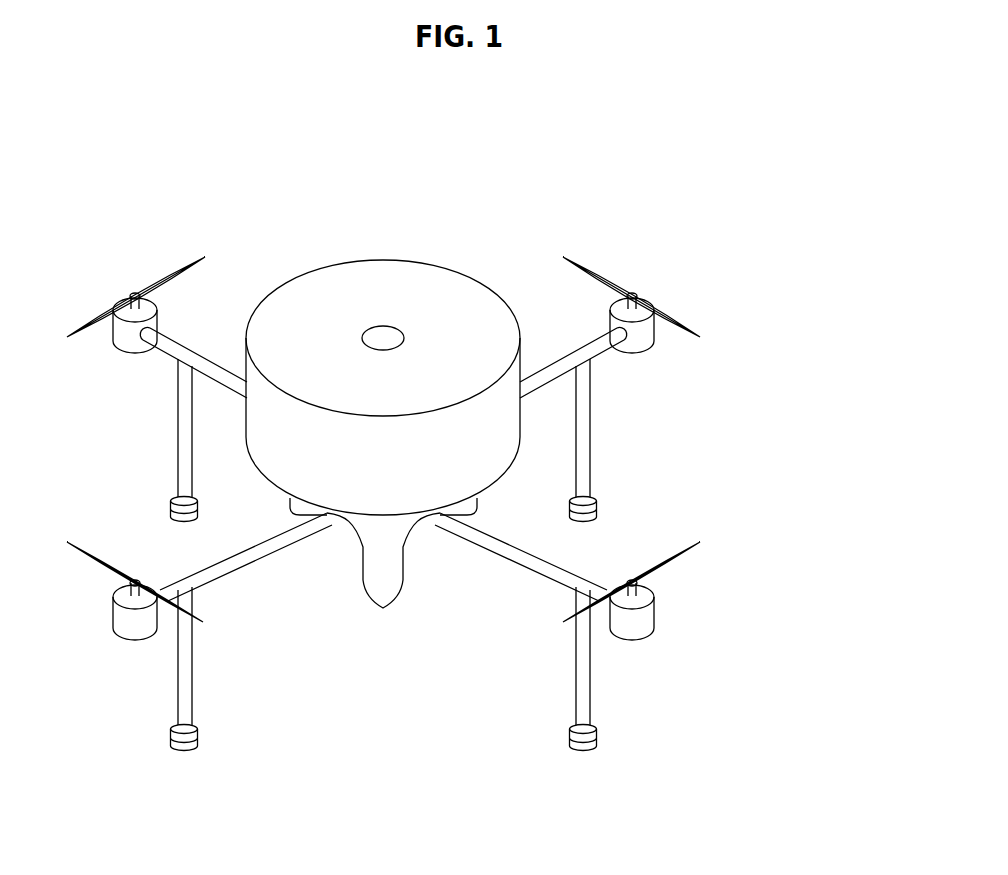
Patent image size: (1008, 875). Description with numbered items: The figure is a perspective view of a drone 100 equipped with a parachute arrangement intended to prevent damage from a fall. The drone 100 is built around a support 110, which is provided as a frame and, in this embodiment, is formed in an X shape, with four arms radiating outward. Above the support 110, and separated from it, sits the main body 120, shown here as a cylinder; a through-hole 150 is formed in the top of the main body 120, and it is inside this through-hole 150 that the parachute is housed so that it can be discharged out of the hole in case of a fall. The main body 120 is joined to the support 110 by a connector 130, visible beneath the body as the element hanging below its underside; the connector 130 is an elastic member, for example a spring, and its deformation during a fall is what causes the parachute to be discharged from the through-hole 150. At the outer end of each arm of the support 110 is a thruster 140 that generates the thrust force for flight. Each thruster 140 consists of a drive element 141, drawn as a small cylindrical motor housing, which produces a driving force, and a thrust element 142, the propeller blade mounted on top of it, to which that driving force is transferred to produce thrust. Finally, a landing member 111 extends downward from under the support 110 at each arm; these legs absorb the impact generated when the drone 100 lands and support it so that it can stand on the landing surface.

The drone 100 is at (407, 117).
The support 110 is at (558, 363).
The landing member 111 is at (583, 413).
The main body 120 is at (302, 295).
The connector 130 is at (383, 570).
The thruster 140 is at (462, 446).
The drive element 141 is at (642, 333).
The thrust element 142 is at (662, 307).
The through-hole 150 is at (382, 340).